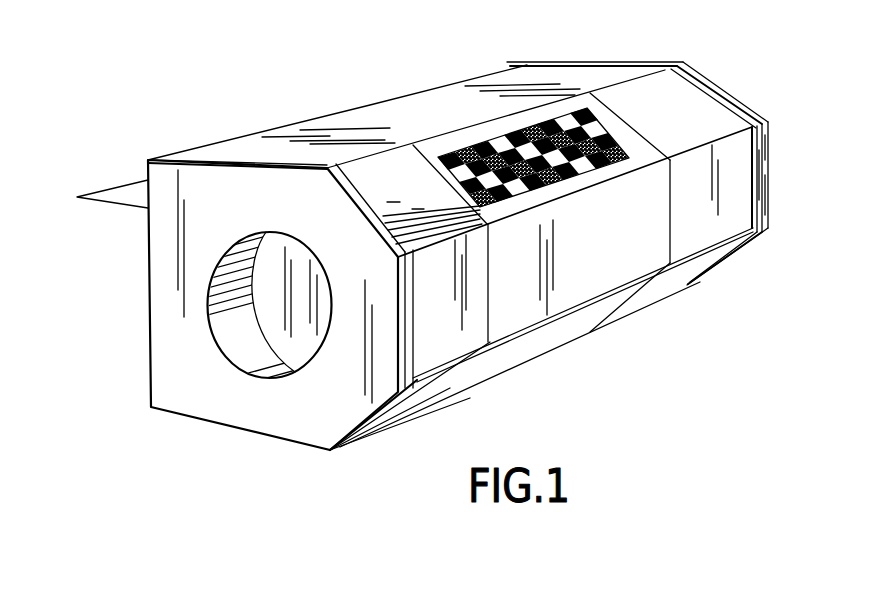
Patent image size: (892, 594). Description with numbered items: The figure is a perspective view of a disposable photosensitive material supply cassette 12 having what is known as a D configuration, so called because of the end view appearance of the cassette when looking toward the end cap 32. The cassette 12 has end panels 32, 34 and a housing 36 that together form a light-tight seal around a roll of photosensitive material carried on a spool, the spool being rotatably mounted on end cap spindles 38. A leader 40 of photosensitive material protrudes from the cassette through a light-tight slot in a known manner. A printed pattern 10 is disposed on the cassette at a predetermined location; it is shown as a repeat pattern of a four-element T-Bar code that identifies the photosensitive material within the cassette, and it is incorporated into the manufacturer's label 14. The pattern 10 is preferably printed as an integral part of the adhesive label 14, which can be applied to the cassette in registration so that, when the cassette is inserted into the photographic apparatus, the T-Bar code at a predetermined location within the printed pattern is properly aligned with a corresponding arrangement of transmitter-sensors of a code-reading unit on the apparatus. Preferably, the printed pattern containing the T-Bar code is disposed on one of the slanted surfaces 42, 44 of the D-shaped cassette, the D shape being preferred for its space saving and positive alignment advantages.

The printed pattern 10 is at (496, 130).
The disposable photosensitive material supply cassette 12 is at (733, 76).
The manufacturer's label 14 is at (623, 262).
The end cap 32 is at (253, 415).
The end panel 34 is at (763, 200).
The housing 36 is at (393, 117).
The end cap spindle 38 is at (277, 305).
The leader 40 is at (105, 193).
The slanted surface 42 is at (668, 102).
The slanted surface 44 is at (670, 287).